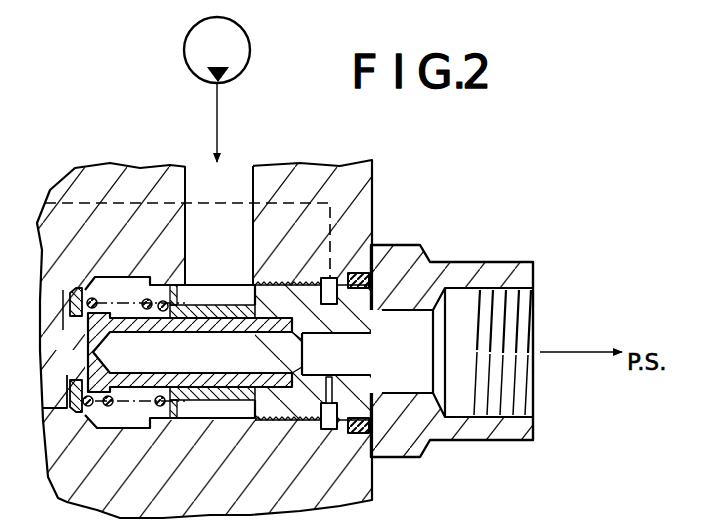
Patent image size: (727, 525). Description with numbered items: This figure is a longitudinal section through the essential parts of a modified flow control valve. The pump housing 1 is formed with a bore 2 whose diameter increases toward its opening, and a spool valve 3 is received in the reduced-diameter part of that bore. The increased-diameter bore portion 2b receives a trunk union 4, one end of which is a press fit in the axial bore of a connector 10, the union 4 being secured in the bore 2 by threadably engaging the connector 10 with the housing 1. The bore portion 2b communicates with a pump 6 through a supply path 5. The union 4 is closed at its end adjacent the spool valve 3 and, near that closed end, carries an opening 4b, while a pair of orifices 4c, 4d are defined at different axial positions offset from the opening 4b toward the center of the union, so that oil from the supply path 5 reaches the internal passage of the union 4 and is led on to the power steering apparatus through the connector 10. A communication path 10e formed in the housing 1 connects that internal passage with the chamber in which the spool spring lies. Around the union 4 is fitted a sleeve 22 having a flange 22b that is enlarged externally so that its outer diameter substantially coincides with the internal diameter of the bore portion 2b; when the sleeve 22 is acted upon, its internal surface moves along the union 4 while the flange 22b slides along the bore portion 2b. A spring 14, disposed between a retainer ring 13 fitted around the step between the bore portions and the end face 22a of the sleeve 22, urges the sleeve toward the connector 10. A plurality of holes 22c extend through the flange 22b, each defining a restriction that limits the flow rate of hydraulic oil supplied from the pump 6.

The pump housing 1 is at (353, 200).
The bore 2 is at (248, 412).
The bore portion 2b is at (250, 283).
The spool valve 3 is at (56, 295).
The trunk union 4 is at (232, 390).
The opening 4b is at (125, 332).
The orifice 4c is at (137, 390).
The orifice 4d is at (172, 330).
The supply path 5 is at (255, 200).
The pump 6 is at (250, 57).
The connector 10 is at (467, 268).
The communication path 10e is at (165, 205).
The retainer ring 13 is at (75, 420).
The spring 14 is at (90, 290).
The sleeve 22 is at (208, 400).
The end face of sleeve 22a is at (158, 420).
The flange 22b is at (163, 285).
The holes 22c is at (200, 285).